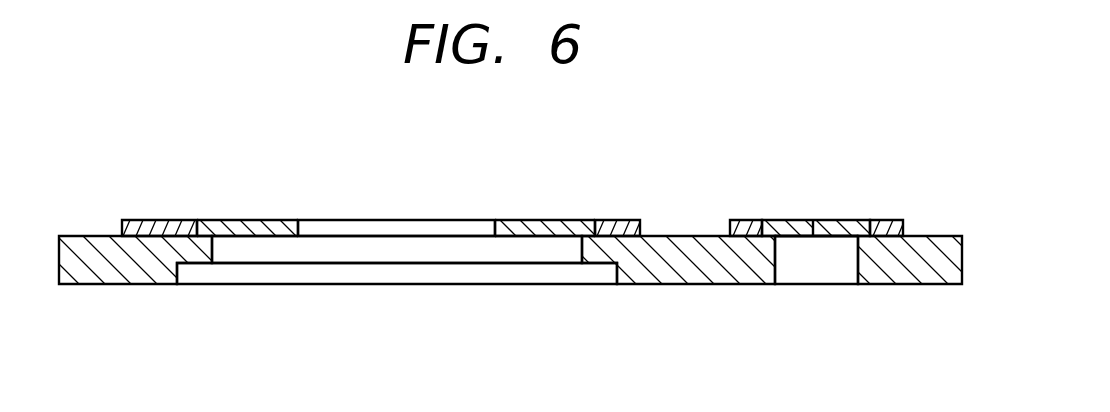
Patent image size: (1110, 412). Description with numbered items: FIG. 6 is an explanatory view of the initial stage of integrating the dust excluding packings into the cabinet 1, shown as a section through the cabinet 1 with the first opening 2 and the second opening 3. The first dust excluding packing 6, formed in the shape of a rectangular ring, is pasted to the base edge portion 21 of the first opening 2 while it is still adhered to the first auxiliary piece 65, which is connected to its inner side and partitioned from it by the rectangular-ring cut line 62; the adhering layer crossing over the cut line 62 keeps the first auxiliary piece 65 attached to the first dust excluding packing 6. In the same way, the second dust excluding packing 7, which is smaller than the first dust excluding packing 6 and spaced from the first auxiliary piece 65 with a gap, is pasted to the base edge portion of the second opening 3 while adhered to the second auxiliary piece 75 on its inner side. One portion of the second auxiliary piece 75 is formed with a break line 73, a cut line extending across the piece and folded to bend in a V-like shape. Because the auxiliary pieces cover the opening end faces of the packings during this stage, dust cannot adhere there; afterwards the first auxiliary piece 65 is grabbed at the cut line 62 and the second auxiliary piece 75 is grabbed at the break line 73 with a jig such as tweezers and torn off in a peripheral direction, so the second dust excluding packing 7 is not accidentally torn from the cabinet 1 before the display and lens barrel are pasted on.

The cabinet 1 is at (925, 284).
The first opening 2 is at (463, 252).
The base edge portion 21 is at (193, 253).
The second opening 3 is at (842, 272).
The first dust excluding packing 6 is at (152, 232).
The cut line 62 is at (202, 228).
The first auxiliary piece 65 is at (263, 228).
The second dust excluding packing 7 is at (747, 228).
The break line 73 is at (803, 233).
The second auxiliary piece 75 is at (830, 228).